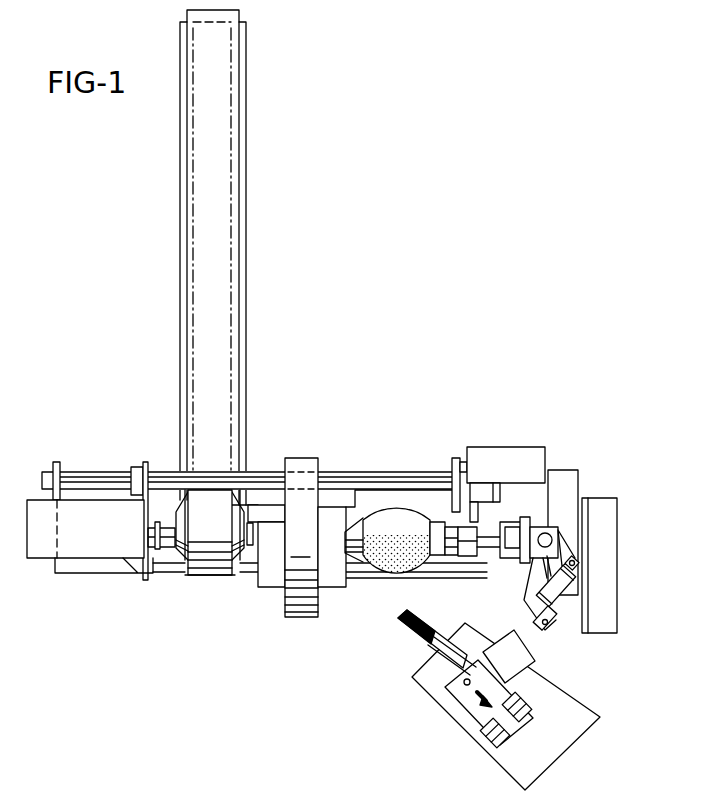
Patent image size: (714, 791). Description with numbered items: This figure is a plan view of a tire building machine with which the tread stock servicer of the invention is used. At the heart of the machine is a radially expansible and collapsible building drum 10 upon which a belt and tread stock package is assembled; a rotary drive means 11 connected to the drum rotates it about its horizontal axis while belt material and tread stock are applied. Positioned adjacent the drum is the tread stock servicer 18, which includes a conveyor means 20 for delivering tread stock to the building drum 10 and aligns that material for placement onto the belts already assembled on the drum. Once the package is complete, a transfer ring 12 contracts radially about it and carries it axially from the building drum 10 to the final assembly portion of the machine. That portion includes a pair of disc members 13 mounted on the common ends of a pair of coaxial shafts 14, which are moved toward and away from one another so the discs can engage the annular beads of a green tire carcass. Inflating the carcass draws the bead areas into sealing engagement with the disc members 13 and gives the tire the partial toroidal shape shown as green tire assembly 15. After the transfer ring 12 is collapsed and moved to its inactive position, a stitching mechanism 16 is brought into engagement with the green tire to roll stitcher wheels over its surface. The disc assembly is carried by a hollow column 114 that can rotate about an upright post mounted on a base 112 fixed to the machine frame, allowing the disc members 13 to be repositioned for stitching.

The building drum 10 is at (203, 565).
The rotary drive means 11 is at (88, 548).
The transfer ring 12 is at (300, 608).
The disc members 13 is at (358, 577).
The coaxial shafts 14 is at (487, 552).
The green tire assembly 15 is at (397, 513).
The stitching mechanism 16 is at (430, 688).
The tread stock servicer 18 is at (247, 268).
The conveyor means 20 is at (222, 196).
The base 112 is at (570, 478).
The hollow column 114 is at (543, 527).